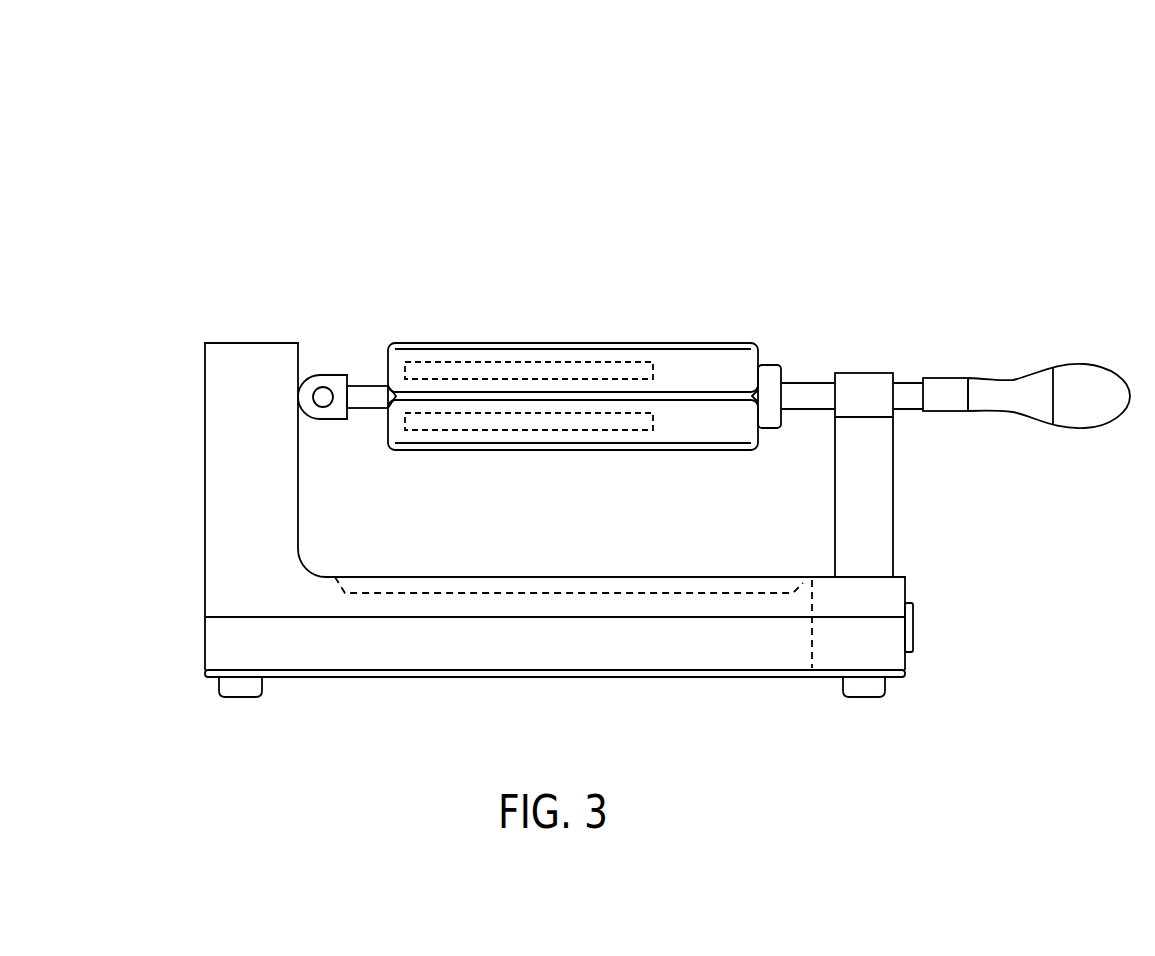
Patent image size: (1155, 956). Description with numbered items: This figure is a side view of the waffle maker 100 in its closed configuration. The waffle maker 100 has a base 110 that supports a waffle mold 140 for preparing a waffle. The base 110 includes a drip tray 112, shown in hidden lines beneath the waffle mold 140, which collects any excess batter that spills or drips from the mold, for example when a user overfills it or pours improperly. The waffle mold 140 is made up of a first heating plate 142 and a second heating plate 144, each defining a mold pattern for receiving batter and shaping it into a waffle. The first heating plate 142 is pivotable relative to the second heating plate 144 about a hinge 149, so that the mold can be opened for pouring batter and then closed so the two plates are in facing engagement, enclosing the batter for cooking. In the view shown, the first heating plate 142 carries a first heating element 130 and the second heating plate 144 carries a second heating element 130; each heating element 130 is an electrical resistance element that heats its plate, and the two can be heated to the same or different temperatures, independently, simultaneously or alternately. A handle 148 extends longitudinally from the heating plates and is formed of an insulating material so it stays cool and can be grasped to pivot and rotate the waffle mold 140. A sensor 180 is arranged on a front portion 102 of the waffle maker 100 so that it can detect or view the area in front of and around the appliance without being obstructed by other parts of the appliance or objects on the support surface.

The waffle maker 100 is at (498, 120).
The front portion 102 is at (905, 583).
The base 110 is at (554, 660).
The drip tray 112 is at (407, 587).
The heating element 130 is at (478, 360).
The waffle mold 140 is at (584, 362).
The first heating plate 142 is at (678, 430).
The second heating plate 144 is at (722, 355).
The handle 148 is at (1087, 380).
The hinge 149 is at (325, 380).
The sensor 180 is at (913, 627).